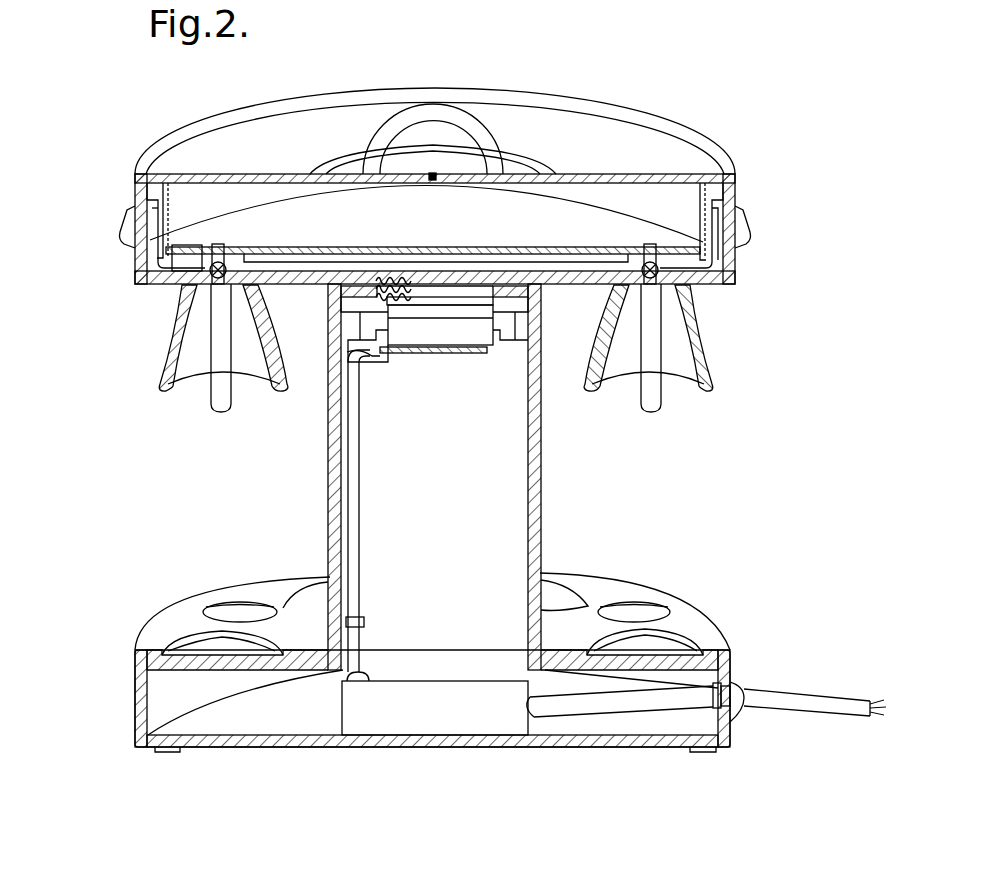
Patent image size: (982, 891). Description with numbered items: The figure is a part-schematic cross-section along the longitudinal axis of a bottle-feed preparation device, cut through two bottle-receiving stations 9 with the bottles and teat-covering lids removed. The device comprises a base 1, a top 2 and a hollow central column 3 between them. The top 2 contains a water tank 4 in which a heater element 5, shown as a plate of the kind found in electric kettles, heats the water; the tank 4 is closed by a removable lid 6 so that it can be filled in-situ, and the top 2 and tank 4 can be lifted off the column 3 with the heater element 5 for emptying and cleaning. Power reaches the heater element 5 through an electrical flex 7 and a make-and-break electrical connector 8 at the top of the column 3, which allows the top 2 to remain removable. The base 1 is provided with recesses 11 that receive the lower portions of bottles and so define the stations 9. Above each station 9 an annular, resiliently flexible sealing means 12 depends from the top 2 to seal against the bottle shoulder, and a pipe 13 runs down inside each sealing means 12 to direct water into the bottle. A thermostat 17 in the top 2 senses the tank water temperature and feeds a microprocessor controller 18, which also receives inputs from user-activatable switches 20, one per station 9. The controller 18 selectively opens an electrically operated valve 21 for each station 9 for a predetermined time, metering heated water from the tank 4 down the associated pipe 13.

The base 1 is at (205, 720).
The top 2 is at (133, 183).
The central column 3 is at (515, 507).
The water tank 4 is at (690, 208).
The heater element 5 is at (432, 261).
The removable lid 6 is at (607, 125).
The electrical flex 7 is at (672, 660).
The make-and-break electrical connector 8 is at (458, 312).
The bottle-receiving station 9 is at (192, 508).
The recess 11 is at (210, 647).
The air-tight sealing means 12 is at (165, 371).
The pipe 13 is at (211, 406).
The thermostat 17 is at (166, 283).
The microprocessor controller 18 is at (435, 676).
The switch 20 is at (118, 236).
The electrically operated valve 21 is at (244, 254).